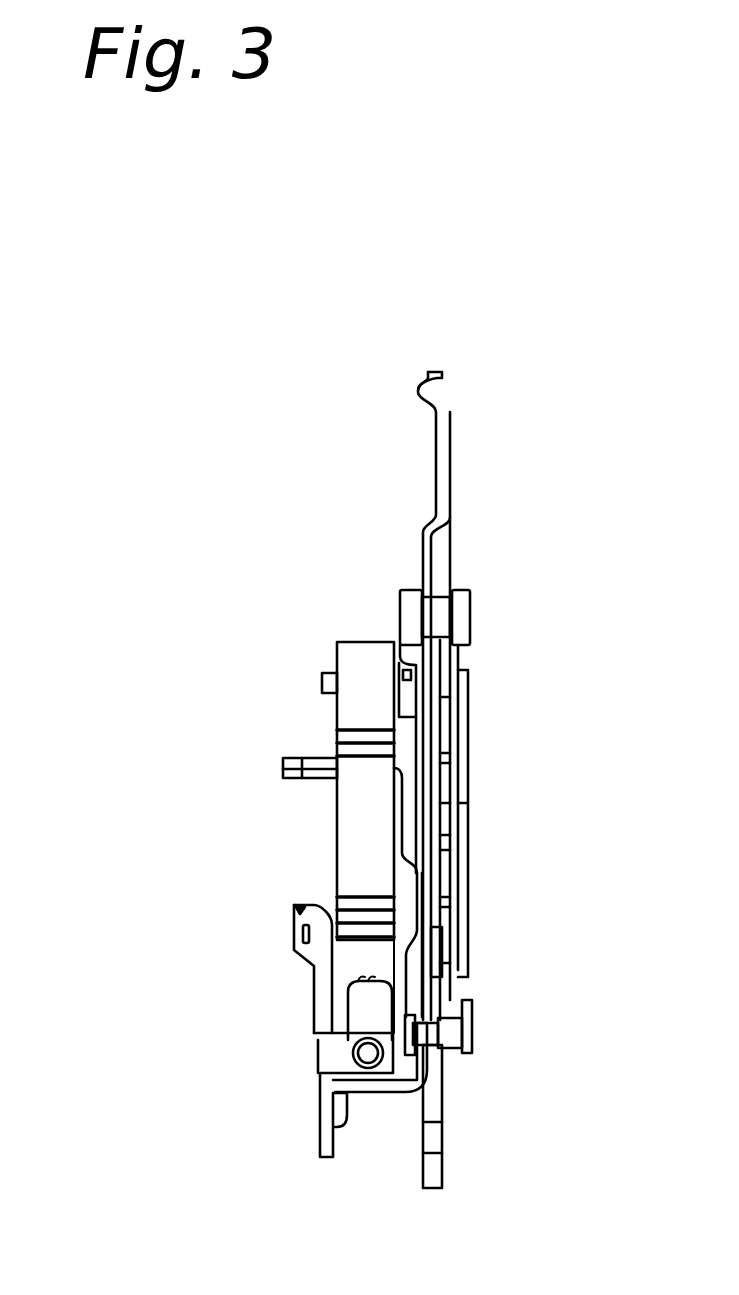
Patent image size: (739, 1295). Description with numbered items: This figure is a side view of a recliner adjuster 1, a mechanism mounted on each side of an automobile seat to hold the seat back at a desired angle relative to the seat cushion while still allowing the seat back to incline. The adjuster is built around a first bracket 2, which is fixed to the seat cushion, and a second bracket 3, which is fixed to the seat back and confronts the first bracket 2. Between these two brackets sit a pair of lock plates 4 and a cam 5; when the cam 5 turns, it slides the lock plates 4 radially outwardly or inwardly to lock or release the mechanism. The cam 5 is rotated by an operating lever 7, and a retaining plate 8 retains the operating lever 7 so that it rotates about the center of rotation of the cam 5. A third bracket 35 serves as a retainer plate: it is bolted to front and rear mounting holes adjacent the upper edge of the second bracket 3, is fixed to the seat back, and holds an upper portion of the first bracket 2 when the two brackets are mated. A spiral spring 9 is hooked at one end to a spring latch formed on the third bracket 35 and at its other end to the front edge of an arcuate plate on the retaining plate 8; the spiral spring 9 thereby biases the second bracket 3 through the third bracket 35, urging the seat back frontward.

The recliner adjuster 1 is at (126, 583).
The first bracket 2 is at (443, 1082).
The second bracket 3 is at (455, 657).
The lock plates 4 is at (443, 727).
The cam 5 is at (443, 873).
The operating lever 7 is at (320, 1063).
The retaining plate 8 is at (402, 954).
The spiral spring 9 is at (337, 835).
The third bracket 35 is at (433, 370).